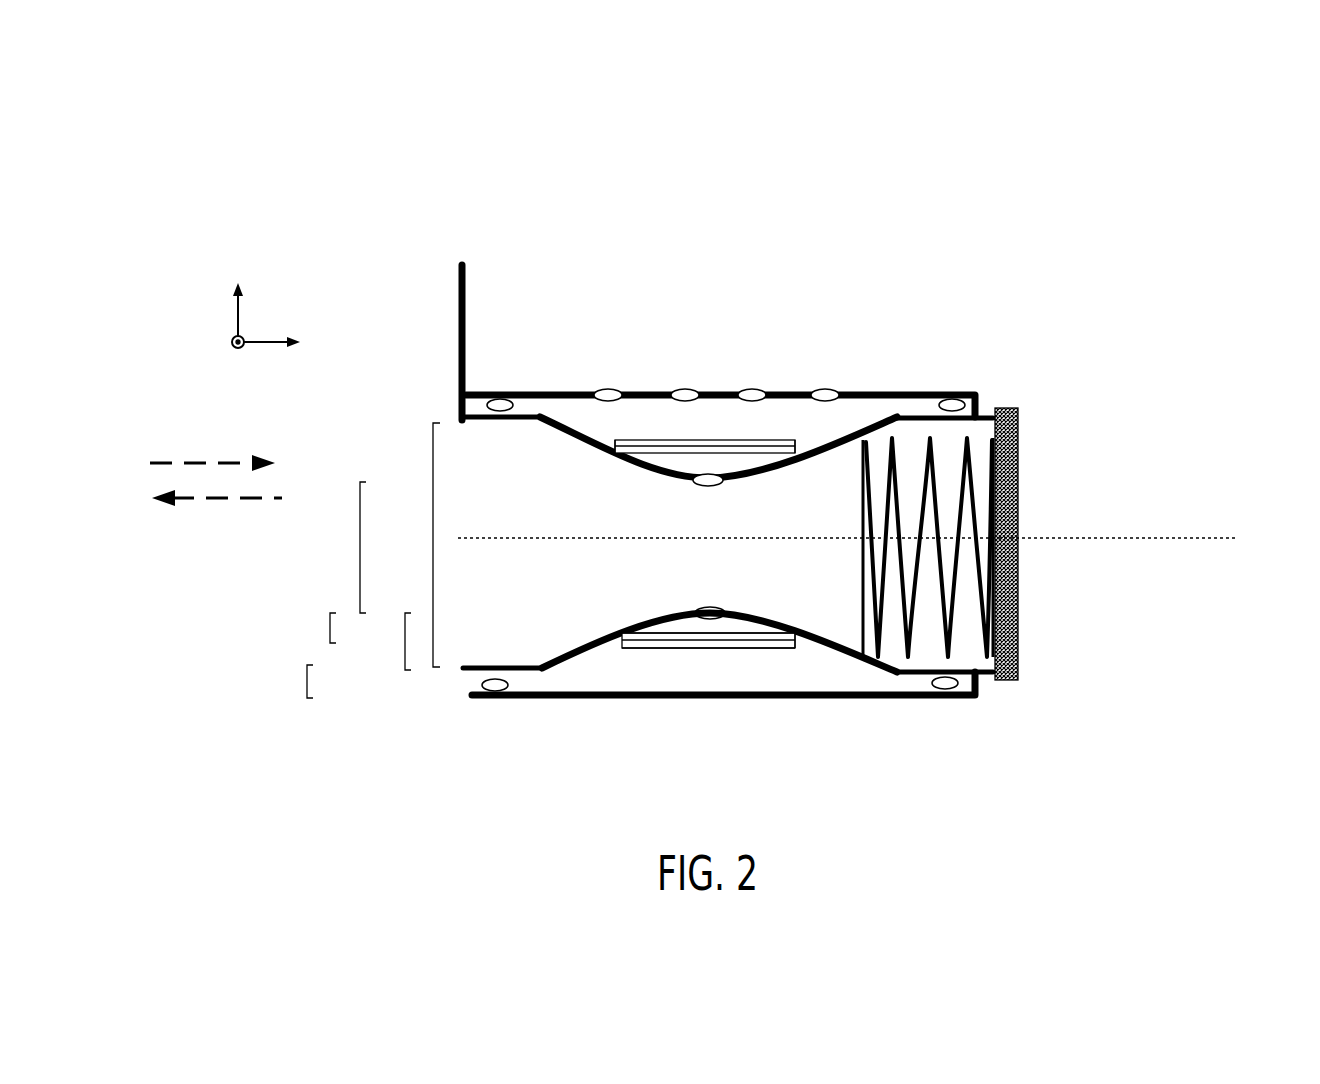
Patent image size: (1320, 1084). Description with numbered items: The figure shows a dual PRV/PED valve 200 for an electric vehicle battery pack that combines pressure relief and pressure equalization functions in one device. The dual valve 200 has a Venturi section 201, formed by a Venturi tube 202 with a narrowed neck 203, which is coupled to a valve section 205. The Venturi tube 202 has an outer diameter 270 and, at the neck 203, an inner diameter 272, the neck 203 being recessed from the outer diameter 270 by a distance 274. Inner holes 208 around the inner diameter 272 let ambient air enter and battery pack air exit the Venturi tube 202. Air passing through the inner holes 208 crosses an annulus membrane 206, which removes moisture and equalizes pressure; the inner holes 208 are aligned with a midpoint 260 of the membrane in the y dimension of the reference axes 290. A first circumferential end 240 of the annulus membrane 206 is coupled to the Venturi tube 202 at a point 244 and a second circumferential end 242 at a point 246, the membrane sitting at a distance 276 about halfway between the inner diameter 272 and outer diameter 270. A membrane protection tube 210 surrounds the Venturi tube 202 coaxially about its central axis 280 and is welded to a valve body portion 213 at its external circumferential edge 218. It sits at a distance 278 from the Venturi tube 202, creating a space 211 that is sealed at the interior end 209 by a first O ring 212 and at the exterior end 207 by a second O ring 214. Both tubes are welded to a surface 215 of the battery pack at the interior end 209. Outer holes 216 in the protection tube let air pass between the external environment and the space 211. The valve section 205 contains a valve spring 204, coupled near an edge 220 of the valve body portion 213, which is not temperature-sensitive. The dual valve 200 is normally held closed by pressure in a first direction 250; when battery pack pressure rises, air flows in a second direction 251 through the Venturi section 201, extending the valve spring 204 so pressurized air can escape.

The dual PRV/PED valve 200 is at (1107, 145).
The Venturi section 201 is at (551, 535).
The Venturi tube 202 is at (538, 420).
The neck 203 is at (718, 498).
The valve spring 204 is at (975, 497).
The valve section 205 is at (786, 516).
The annulus membrane 206 is at (765, 440).
The exterior end 207 is at (1126, 521).
The inner holes 208 is at (702, 488).
The interior end 209 is at (425, 466).
The membrane protection tube 210 is at (868, 395).
The space 211 is at (550, 414).
The first O ring 212 is at (503, 398).
The valve body portion 213 is at (994, 410).
The second O ring 214 is at (920, 395).
The surface 215 is at (466, 283).
The outer holes 216 is at (613, 390).
The external circumferential edge 218 is at (973, 398).
The edge 220 is at (898, 676).
The first circumferential end 240 is at (622, 650).
The second circumferential end 242 is at (796, 648).
The point 244 is at (622, 632).
The point 246 is at (797, 630).
The first direction 250 is at (193, 502).
The second direction 251 is at (195, 460).
The midpoint 260 is at (712, 440).
The outer diameter 270 is at (433, 548).
The inner diameter 272 is at (360, 548).
The distance 274 is at (405, 641).
The distance 276 is at (330, 629).
The distance 278 is at (307, 681).
The central axis 280 is at (1188, 540).
The reference axes 290 is at (284, 311).